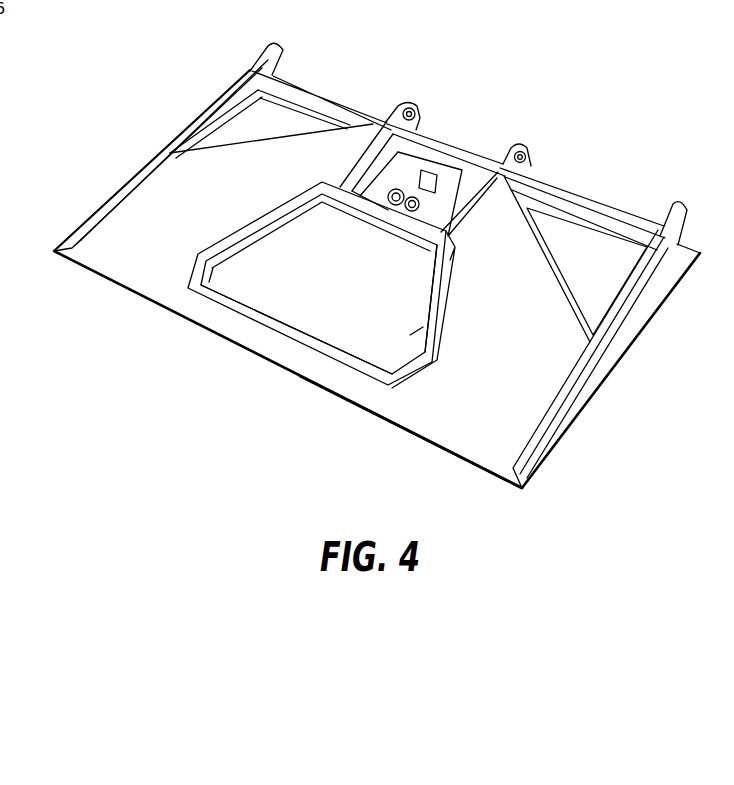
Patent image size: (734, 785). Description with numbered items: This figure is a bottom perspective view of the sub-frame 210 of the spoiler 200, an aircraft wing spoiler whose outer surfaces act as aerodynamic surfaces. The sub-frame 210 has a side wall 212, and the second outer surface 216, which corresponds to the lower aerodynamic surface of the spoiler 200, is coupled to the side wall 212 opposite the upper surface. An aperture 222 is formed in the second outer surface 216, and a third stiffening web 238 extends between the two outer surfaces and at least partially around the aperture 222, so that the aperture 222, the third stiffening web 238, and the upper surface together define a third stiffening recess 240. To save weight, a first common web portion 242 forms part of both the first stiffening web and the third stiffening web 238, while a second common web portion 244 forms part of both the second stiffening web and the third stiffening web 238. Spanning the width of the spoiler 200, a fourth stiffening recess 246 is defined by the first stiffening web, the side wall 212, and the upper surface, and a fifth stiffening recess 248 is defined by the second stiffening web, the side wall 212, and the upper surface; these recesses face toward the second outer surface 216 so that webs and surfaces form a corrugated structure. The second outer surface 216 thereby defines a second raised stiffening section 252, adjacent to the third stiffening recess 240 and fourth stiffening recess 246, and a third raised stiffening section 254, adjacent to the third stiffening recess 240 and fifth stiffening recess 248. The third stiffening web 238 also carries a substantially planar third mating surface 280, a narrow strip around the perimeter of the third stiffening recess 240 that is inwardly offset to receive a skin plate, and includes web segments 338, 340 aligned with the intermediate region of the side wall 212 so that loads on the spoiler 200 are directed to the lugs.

The spoiler 200 is at (459, 95).
The sub-frame 210 is at (96, 276).
The side wall 212 is at (317, 107).
The second outer surface 216 is at (466, 430).
The aperture 222 is at (338, 348).
The third stiffening web 238 is at (257, 245).
The third stiffening recess 240 is at (311, 294).
The first common web portion 242 is at (420, 330).
The second common web portion 244 is at (265, 216).
The fourth stiffening recess 246 is at (586, 247).
The fifth stiffening recess 248 is at (240, 116).
The second raised stiffening section 252 is at (530, 349).
The third raised stiffening section 254 is at (163, 228).
The third mating surface 280 is at (356, 368).
The web segment 338 is at (300, 224).
The web segment 340 is at (432, 298).